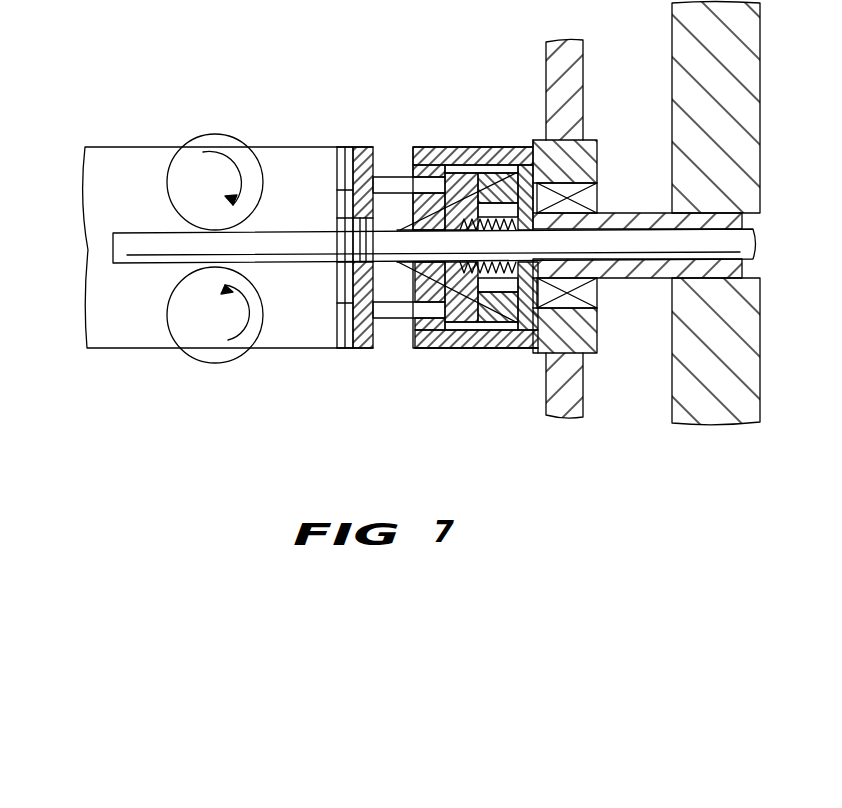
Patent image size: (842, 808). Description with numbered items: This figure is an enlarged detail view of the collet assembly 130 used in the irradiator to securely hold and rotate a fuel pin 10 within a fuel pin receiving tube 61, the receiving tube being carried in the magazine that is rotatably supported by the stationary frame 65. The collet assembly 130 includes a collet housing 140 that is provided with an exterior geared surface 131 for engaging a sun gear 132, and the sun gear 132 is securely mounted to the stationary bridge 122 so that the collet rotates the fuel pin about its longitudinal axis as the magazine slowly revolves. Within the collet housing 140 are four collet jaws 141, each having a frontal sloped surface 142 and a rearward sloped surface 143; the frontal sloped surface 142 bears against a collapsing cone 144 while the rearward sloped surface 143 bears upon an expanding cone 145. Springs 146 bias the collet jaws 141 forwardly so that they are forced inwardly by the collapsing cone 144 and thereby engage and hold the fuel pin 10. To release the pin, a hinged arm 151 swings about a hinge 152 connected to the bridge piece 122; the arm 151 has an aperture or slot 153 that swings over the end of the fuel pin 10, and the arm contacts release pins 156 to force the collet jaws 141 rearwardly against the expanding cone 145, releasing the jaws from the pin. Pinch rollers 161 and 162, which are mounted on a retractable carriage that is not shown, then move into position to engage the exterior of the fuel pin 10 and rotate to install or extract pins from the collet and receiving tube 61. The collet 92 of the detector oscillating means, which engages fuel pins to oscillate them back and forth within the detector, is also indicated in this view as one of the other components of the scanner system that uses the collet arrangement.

The fuel pin 10 is at (128, 245).
The fuel pin receiving tube 61 is at (705, 268).
The frame 65 is at (683, 192).
The collet 92 is at (418, 423).
The bridge 122 is at (138, 200).
The collet assembly 130 is at (447, 86).
The exterior gear portion 131 is at (597, 136).
The sun gear 132 is at (573, 83).
The collet housing 140 is at (459, 152).
The collet jaw 141 is at (455, 225).
The frontal sloped surface 142 is at (421, 348).
The rearward sloped surface 143 is at (480, 350).
The collapsing cone 144 is at (417, 208).
The expanding cone 145 is at (505, 350).
The spring 146 is at (496, 224).
The hinged arm 151 is at (360, 150).
The hinge 152 is at (345, 146).
The slot 153 is at (360, 273).
The release pin 156 is at (391, 176).
The pinch roller 161 is at (200, 153).
The pinch roller 162 is at (198, 340).